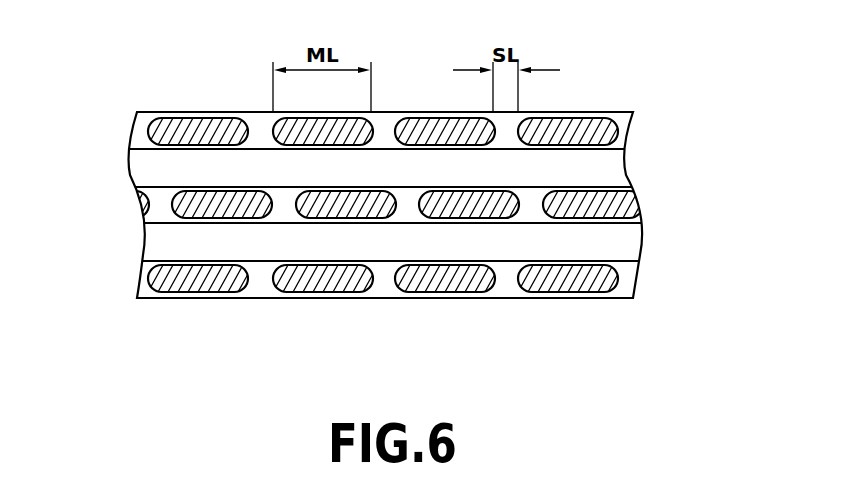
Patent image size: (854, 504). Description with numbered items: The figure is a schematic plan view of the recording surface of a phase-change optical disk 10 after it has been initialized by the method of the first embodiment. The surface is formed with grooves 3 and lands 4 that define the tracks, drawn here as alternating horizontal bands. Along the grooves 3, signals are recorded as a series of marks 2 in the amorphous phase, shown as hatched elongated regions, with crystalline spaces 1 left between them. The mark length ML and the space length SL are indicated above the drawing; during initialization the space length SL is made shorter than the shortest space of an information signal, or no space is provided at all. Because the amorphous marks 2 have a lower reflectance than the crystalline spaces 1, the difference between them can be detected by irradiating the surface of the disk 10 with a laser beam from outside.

The phase-change optical disk 10 is at (593, 88).
The space 1 is at (382, 283).
The mark 2 is at (568, 280).
The groove 3 is at (622, 133).
The land 4 is at (163, 242).